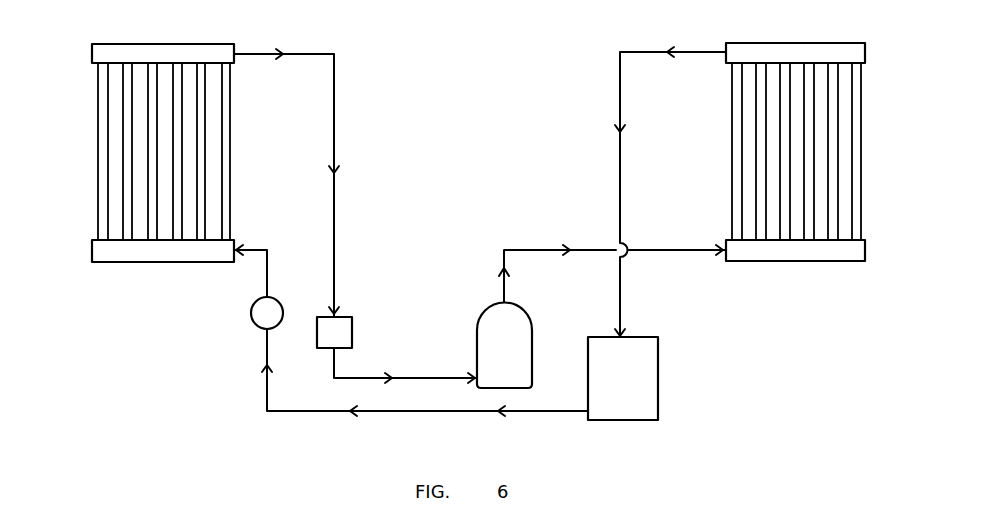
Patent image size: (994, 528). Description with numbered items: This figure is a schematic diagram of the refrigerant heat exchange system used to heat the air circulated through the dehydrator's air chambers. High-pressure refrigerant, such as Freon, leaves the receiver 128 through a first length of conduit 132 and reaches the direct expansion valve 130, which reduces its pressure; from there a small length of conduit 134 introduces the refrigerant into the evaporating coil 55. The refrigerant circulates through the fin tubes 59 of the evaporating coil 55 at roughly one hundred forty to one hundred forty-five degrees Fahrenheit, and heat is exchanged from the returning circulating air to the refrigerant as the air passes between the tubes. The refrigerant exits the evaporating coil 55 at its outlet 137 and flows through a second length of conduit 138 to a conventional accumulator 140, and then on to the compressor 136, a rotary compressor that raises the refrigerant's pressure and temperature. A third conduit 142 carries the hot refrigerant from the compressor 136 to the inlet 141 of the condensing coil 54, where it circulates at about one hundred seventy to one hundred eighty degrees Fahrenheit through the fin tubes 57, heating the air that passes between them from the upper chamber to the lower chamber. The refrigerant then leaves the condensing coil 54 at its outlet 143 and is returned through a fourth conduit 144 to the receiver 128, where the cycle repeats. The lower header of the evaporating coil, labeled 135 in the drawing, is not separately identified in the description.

The condensing coil 54 is at (824, 155).
The evaporating coil 55 is at (159, 154).
The fin tubes 57 is at (840, 168).
The fin tubes 59 is at (198, 155).
The receiver 128 is at (658, 372).
The direct expansion valve 130 is at (251, 314).
The first length of conduit 132 is at (395, 412).
The small length of conduit 134 is at (267, 250).
The lower header of first heat exchanger 135 is at (170, 250).
The compressor 136 is at (522, 308).
The outlet 137 is at (174, 52).
The second length of conduit 138 is at (334, 92).
The accumulator 140 is at (352, 333).
The inlet 141 is at (820, 250).
The third conduit 142 is at (551, 248).
The outlet 143 is at (787, 52).
The fourth conduit 144 is at (620, 157).